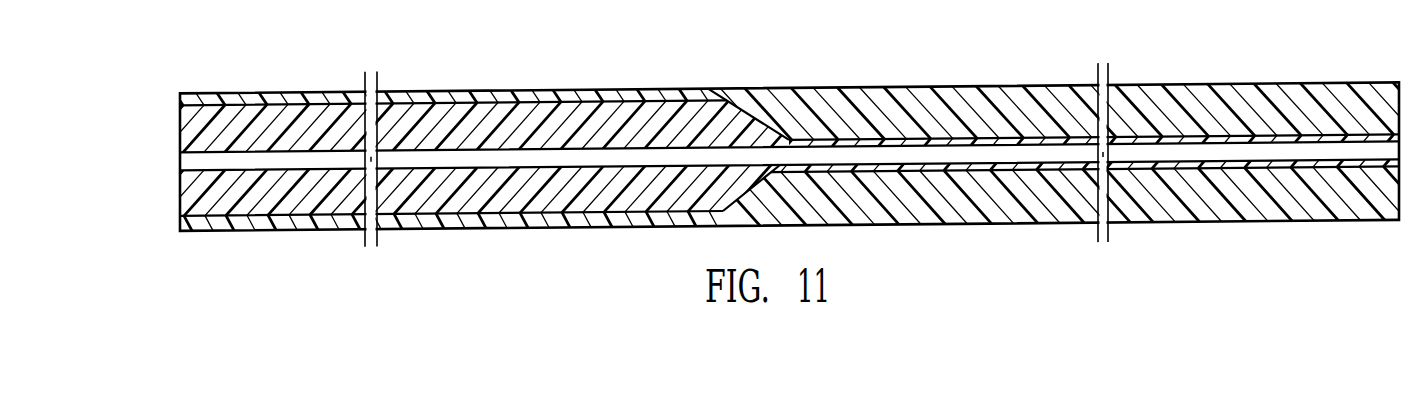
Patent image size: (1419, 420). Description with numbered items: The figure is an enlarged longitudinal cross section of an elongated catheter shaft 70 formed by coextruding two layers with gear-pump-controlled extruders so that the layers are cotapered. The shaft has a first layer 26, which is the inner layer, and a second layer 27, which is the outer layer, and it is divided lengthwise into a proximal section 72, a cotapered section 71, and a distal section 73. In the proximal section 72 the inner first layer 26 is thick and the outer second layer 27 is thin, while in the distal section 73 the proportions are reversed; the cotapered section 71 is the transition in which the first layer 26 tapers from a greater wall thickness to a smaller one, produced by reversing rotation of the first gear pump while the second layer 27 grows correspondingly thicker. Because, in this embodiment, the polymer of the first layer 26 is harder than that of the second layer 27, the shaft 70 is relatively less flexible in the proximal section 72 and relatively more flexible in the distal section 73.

The first layer 26 is at (183, 130).
The proximal section 72 is at (307, 94).
The elongated shaft 70 is at (536, 78).
The cotapered section 71 is at (738, 93).
The second layer 27 is at (968, 93).
The distal section 73 is at (1238, 93).